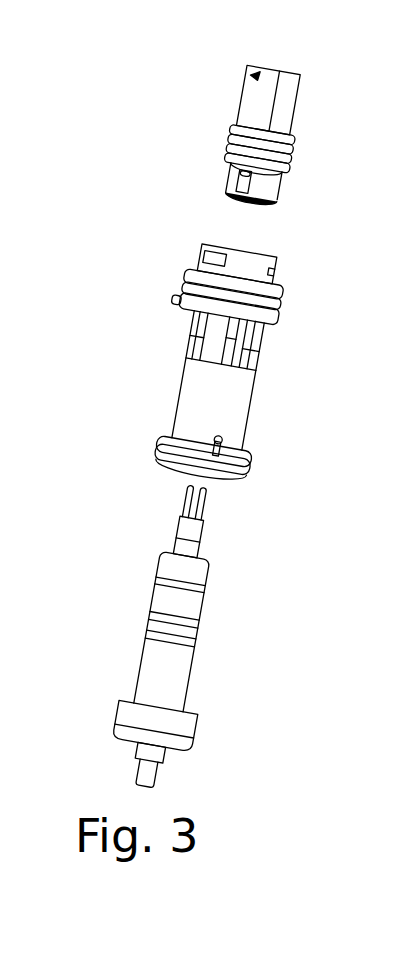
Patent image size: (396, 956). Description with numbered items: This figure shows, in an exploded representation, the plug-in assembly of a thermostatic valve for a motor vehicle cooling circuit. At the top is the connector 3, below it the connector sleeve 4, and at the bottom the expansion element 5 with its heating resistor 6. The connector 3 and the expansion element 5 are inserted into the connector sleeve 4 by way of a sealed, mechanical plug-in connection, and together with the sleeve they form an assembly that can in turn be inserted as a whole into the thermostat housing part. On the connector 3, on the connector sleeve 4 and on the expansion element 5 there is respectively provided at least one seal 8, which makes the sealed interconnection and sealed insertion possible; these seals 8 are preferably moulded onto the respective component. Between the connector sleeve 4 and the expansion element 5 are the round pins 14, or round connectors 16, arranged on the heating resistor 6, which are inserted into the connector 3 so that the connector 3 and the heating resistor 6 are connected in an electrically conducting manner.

The connector 3 is at (302, 122).
The connector sleeve 4 is at (262, 395).
The expansion element 5 is at (173, 665).
The heating resistor 6 is at (187, 535).
The seal 8 is at (228, 157).
The round pin 14 is at (188, 493).
The round connector 16 is at (207, 495).